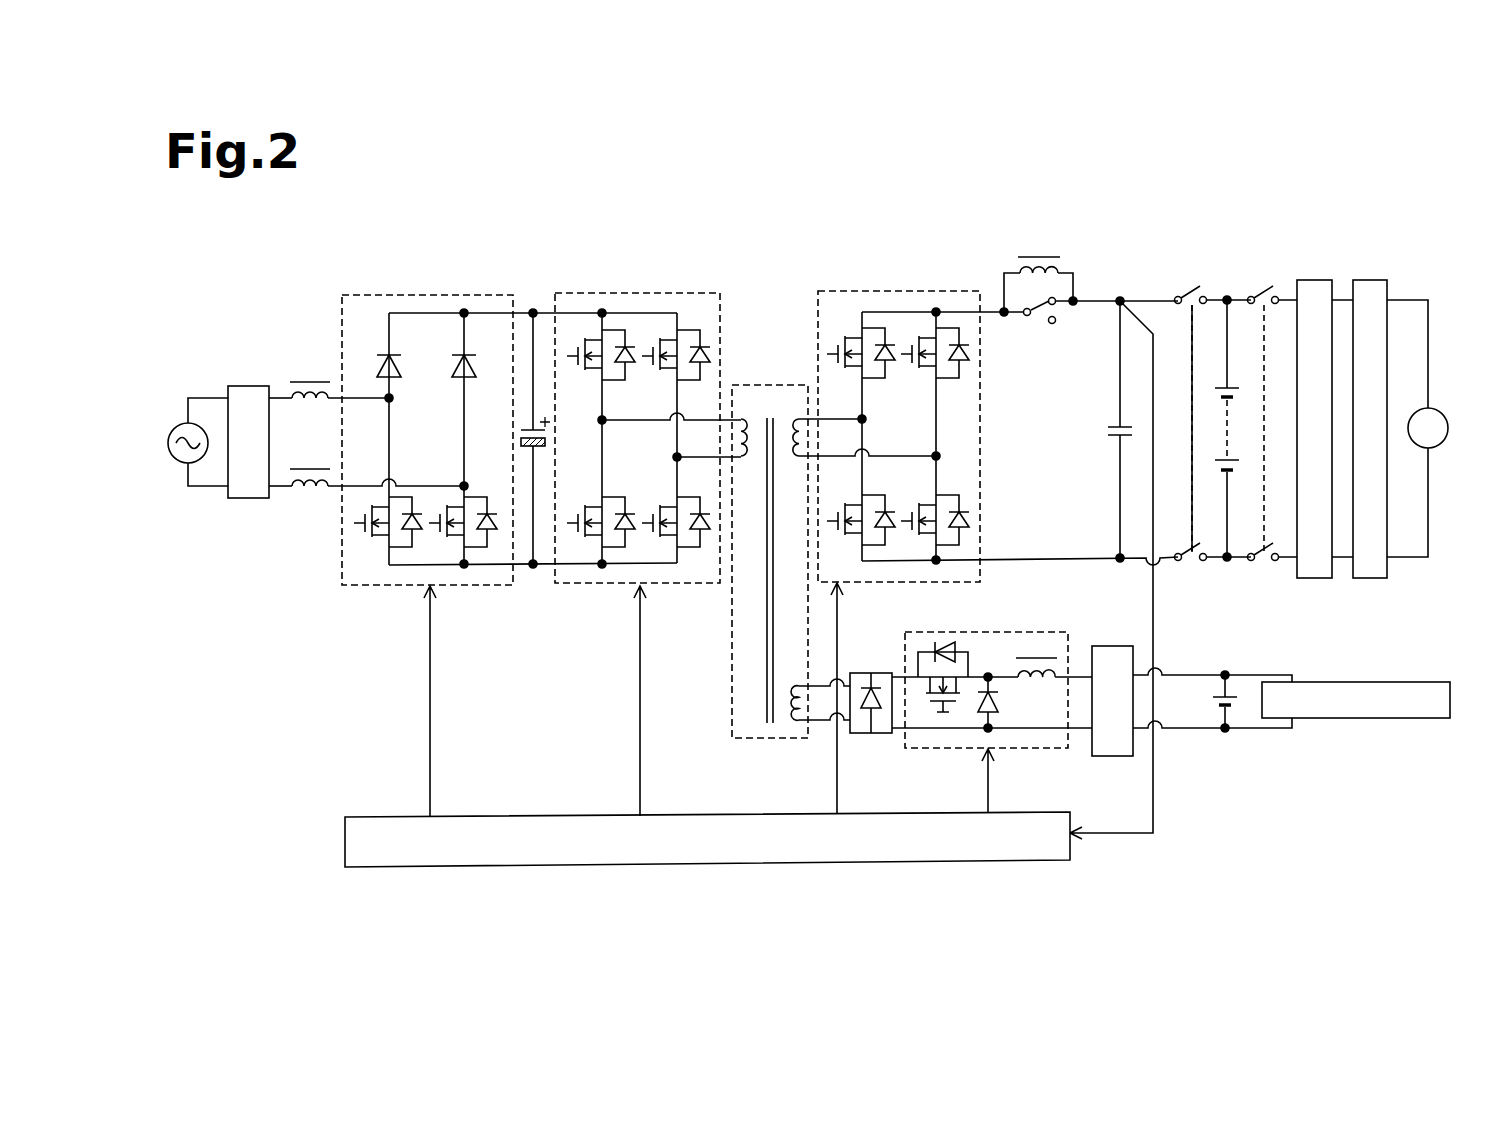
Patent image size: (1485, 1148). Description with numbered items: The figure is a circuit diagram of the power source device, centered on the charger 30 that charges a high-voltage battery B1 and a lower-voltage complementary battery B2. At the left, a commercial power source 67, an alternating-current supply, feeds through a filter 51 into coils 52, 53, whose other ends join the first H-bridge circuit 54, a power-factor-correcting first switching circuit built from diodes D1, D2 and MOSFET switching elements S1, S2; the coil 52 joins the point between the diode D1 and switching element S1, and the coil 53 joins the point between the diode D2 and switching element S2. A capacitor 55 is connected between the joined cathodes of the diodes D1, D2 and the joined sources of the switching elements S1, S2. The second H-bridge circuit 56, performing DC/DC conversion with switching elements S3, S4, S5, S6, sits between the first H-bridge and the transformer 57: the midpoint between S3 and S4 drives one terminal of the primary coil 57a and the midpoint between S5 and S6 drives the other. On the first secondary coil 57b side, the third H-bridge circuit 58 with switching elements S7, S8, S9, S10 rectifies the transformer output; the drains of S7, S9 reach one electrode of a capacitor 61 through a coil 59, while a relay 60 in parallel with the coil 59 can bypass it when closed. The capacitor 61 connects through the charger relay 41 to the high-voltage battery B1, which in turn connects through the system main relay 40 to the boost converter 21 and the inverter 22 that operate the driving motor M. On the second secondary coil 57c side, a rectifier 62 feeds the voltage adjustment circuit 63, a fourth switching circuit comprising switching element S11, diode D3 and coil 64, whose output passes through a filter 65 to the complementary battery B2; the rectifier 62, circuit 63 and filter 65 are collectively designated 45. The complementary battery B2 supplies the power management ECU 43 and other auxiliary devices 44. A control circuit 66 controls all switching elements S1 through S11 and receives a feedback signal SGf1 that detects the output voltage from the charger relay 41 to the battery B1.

The boost converter 21 is at (1317, 278).
The inverter 22 is at (1374, 278).
The charger 30 is at (1093, 172).
The system main relay 40 is at (1266, 290).
The charger relay 41 is at (1184, 288).
The power management ECU 43 is at (1356, 685).
The other auxiliary devices 44 is at (1304, 681).
The low-voltage charging components 45 is at (1193, 753).
The filter 51 is at (248, 499).
The coil 52 is at (313, 403).
The coil 53 is at (313, 491).
The first H-bridge circuit 54 is at (499, 291).
The capacitor 55 is at (520, 431).
The second H-bridge circuit 56 is at (707, 291).
The transformer 57 is at (775, 375).
The primary coil 57a is at (752, 460).
The first secondary coil 57b is at (794, 460).
The second secondary coil 57c is at (792, 723).
The third H-bridge circuit 58 is at (965, 291).
The coil 59 is at (1062, 270).
The relay 60 is at (1047, 296).
The capacitor 61 is at (1108, 426).
The rectifier 62 is at (872, 735).
The voltage adjustment circuit 63 is at (1042, 631).
The coil 64 is at (1032, 682).
The filter 65 is at (1108, 644).
The control circuit 66 is at (1005, 862).
The commercial power source 67 is at (184, 462).
The high-voltage battery B1 is at (1233, 385).
The complementary battery B2 is at (1233, 689).
The diode D1 is at (398, 365).
The diode D2 is at (473, 365).
The diode D3 is at (999, 708).
The switching element S1 is at (384, 549).
The switching element S2 is at (490, 487).
The switching element S3 is at (591, 383).
The switching element S4 is at (584, 492).
The switching element S5 is at (666, 383).
The switching element S6 is at (659, 492).
The switching element S7 is at (852, 381).
The switching element S8 is at (844, 491).
The switching element S9 is at (927, 381).
The switching element S10 is at (917, 491).
The switching element S11 is at (993, 644).
The driving motor M is at (1417, 428).
The feedback signal SGf1 is at (1111, 584).